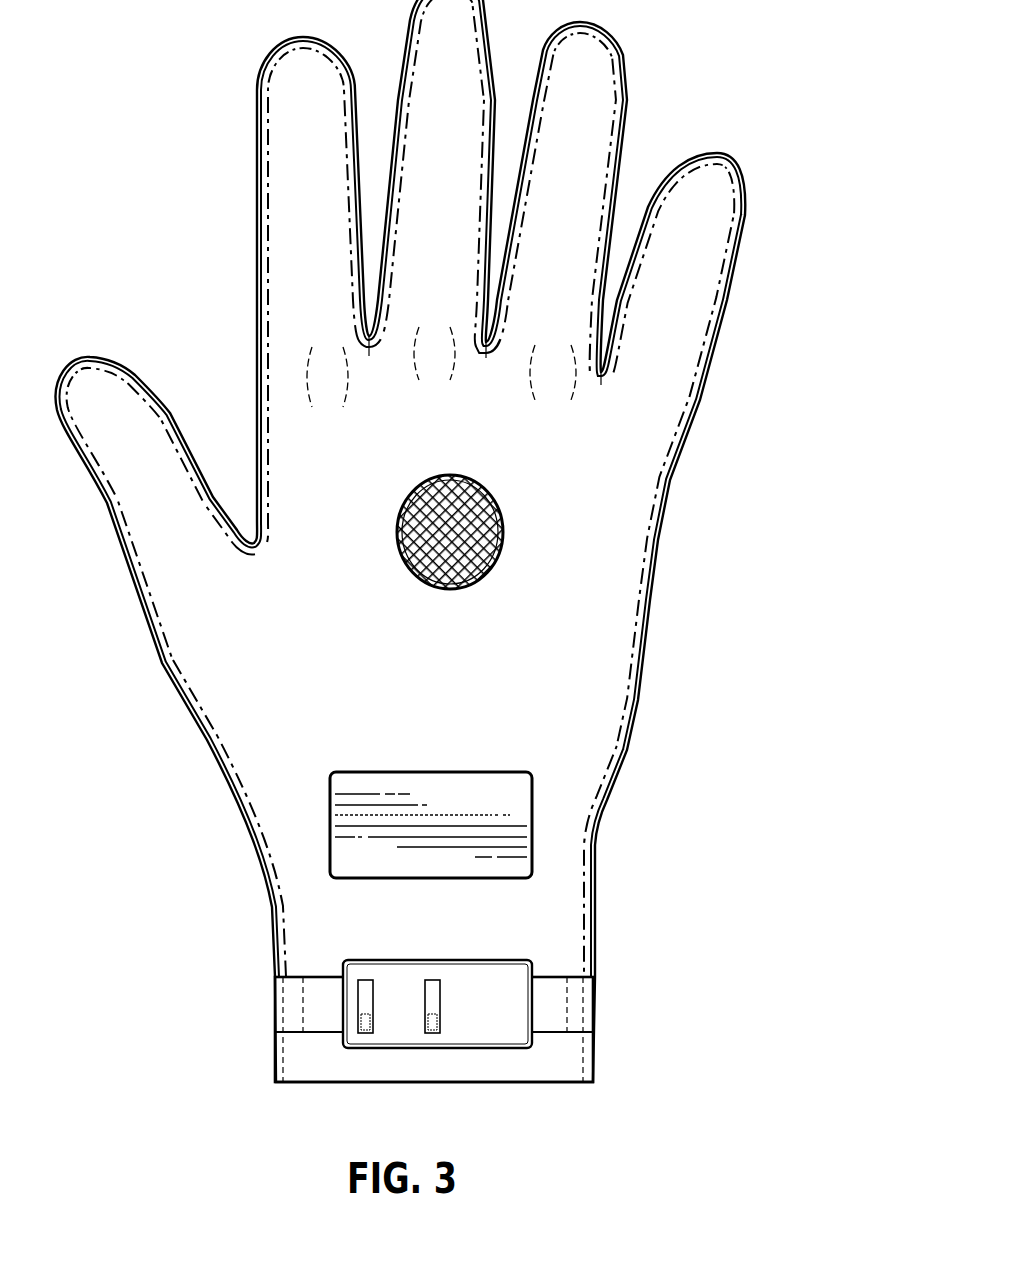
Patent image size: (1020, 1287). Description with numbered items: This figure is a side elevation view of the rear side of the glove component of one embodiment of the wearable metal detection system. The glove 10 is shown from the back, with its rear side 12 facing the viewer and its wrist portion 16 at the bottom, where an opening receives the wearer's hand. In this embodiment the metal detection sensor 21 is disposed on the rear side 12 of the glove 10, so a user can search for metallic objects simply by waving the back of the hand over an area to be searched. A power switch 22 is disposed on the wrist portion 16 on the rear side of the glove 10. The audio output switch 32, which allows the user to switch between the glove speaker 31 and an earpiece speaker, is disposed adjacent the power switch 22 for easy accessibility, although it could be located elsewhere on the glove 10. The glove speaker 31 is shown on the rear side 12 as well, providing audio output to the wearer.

The glove 10 is at (467, 557).
The rear side 12 is at (625, 558).
The wrist portion 16 is at (567, 1065).
The metal detection sensor 21 is at (432, 772).
The power switch 22 is at (420, 1004).
The glove speaker 31 is at (503, 510).
The audio output switch 32 is at (425, 1022).